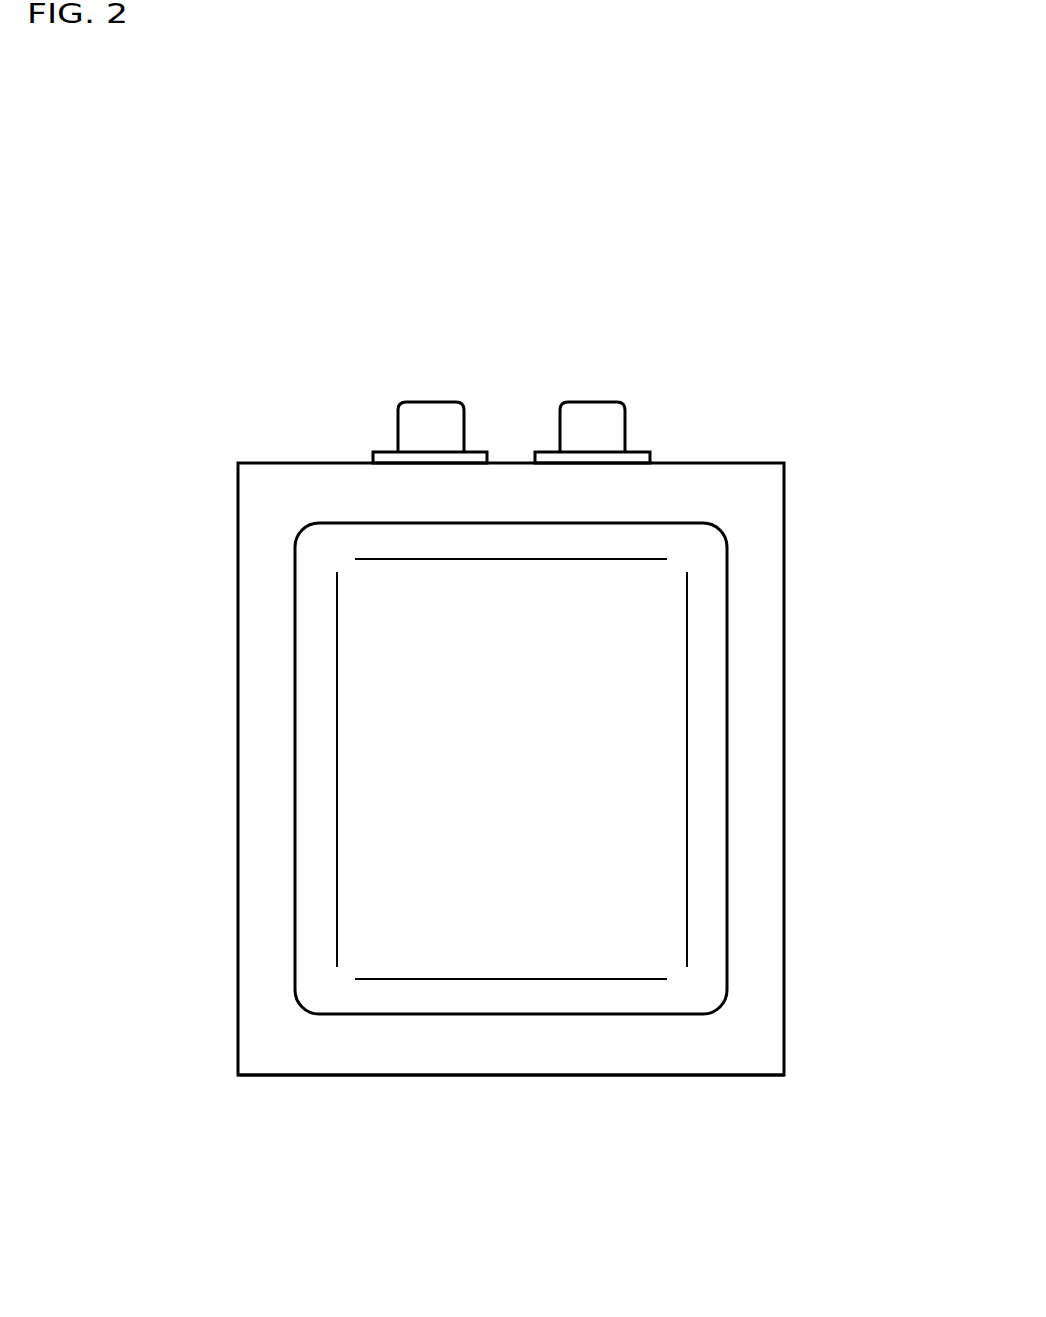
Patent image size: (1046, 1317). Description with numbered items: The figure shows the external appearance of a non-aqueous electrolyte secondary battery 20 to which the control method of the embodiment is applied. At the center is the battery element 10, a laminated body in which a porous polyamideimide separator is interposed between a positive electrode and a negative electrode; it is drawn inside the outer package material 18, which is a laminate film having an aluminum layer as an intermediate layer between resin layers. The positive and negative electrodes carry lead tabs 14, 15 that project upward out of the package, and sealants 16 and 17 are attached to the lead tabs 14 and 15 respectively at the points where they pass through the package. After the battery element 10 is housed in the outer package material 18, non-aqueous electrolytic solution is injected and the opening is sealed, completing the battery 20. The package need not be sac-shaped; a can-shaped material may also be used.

The non-aqueous electrolyte secondary battery 20 is at (662, 332).
The battery element 10 is at (600, 698).
The lead tab 14 is at (432, 402).
The lead tab 15 is at (590, 402).
The sealant 16 is at (383, 452).
The sealant 17 is at (637, 452).
The outer package material 18 is at (510, 1075).